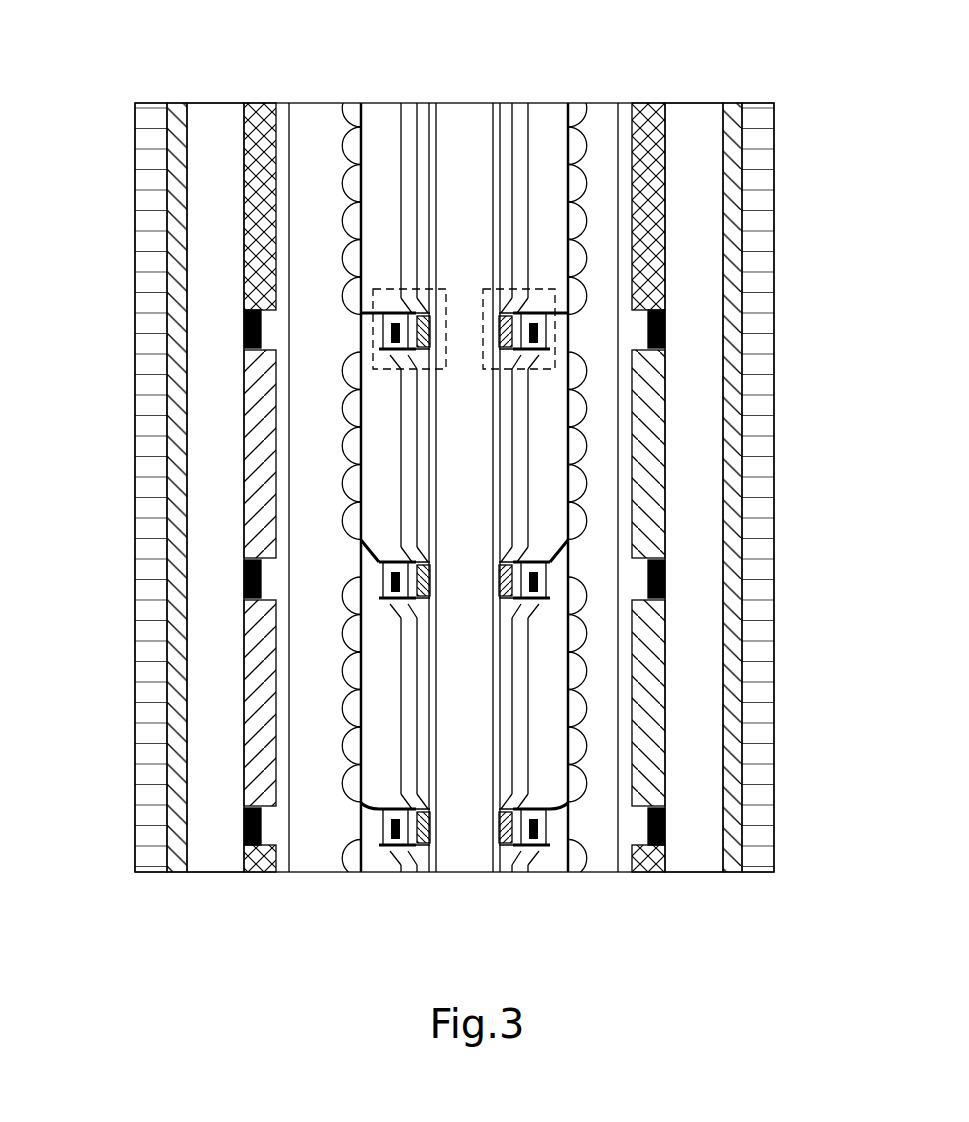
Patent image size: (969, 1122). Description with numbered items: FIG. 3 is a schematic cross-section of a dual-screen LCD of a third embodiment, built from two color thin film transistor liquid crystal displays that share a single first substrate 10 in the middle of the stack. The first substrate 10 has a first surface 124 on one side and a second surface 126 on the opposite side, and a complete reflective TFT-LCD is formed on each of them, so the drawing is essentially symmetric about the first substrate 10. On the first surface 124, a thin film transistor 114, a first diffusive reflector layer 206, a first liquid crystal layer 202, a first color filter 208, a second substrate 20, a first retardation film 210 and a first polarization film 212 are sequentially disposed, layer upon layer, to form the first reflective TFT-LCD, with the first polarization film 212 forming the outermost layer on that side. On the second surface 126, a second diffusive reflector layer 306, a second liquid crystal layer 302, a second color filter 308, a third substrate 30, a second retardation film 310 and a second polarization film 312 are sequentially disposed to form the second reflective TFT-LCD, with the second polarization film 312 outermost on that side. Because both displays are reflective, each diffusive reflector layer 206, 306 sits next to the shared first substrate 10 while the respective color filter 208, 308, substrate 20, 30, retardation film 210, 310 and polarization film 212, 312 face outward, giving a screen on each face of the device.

The first substrate 10 is at (470, 114).
The second substrate 20 is at (217, 112).
The third substrate 30 is at (703, 112).
The thin film transistor 114 is at (425, 287).
The first surface 124 is at (442, 122).
The second surface 126 is at (563, 128).
The first liquid crystal layer 202 is at (313, 115).
The first diffusive reflector layer 206 is at (352, 865).
The first color filter 208 is at (255, 870).
The first retardation film 210 is at (174, 118).
The first polarization film 212 is at (145, 428).
The second liquid crystal layer 302 is at (600, 112).
The second diffusive reflector layer 306 is at (577, 868).
The second color filter 308 is at (650, 868).
The second retardation film 310 is at (733, 110).
The second polarization film 312 is at (768, 452).